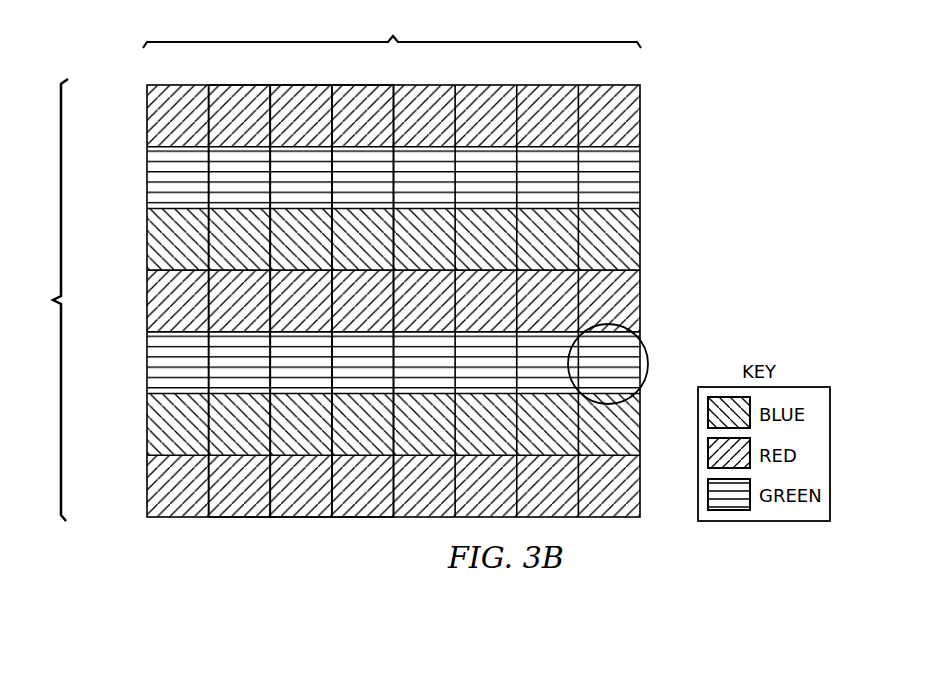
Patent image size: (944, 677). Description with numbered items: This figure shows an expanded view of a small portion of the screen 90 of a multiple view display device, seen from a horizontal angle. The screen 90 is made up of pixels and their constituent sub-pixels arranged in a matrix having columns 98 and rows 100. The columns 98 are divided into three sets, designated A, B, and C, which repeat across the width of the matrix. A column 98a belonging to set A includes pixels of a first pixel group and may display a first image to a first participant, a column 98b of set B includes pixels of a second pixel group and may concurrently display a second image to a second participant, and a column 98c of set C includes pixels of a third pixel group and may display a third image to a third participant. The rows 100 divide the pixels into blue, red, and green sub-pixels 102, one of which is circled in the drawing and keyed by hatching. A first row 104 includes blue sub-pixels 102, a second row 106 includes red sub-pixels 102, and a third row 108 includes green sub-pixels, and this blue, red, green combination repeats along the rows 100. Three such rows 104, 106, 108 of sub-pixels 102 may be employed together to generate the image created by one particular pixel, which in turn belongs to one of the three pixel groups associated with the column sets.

The screen 90 is at (675, 148).
The columns 98 is at (392, 46).
The column 98a is at (235, 518).
The column 98b is at (297, 518).
The column 98c is at (358, 518).
The rows 100 is at (40, 300).
The sub-pixel 102 is at (648, 360).
The first row 104 is at (147, 236).
The second row 106 is at (147, 282).
The third row 108 is at (146, 365).